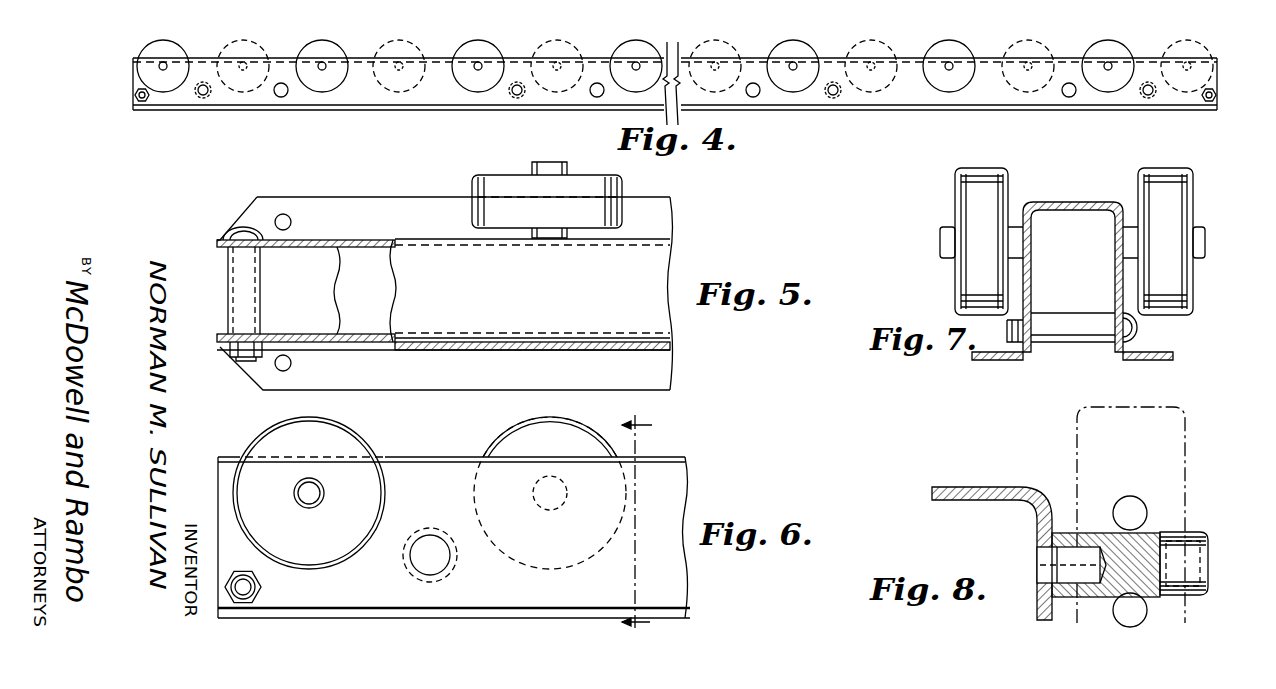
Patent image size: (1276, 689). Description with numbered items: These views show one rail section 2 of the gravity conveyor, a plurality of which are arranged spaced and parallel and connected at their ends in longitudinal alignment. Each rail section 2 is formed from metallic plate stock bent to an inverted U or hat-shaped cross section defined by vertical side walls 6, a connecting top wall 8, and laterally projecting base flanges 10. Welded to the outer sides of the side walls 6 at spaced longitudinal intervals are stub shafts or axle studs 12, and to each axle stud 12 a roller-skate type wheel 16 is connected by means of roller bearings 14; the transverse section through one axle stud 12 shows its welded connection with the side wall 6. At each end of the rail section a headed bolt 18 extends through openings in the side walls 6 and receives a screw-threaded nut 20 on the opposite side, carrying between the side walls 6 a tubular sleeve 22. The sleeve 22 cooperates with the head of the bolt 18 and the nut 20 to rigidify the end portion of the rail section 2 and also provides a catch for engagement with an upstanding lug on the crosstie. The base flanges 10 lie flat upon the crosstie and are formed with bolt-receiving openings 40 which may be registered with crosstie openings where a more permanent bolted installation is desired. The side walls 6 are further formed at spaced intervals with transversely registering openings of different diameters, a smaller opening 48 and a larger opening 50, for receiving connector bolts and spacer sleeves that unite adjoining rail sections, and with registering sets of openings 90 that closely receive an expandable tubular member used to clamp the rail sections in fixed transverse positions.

In FIG. 6, the rail section 2 is at (697, 472).
In FIG. 7, the rail section 2 is at (1088, 190).
In FIG. 5, the vertical side wall 6 is at (306, 291).
In FIG. 7, the vertical side wall 6 is at (1117, 283).
In FIG. 8, the vertical side wall 6 is at (1037, 606).
In FIG. 5, the top wall 8 is at (655, 265).
In FIG. 7, the top wall 8 is at (1080, 205).
In FIG. 8, the top wall 8 is at (965, 490).
In FIG. 5, the base flange 10 is at (398, 192).
In FIG. 6, the base flange 10 is at (487, 612).
In FIG. 7, the base flange 10 is at (993, 362).
In FIG. 4, the axle stud 12 is at (949, 66).
In FIG. 5, the axle stud 12 is at (546, 163).
In FIG. 6, the axle stud 12 is at (310, 493).
In FIG. 7, the axle stud 12 is at (1015, 232).
In FIG. 8, the axle stud 12 is at (1195, 565).
In FIG. 8, the roller bearing 14 is at (1150, 514).
In FIG. 4, the wheel 16 is at (392, 47).
In FIG. 5, the wheel 16 is at (620, 182).
In FIG. 6, the wheel 16 is at (500, 456).
In FIG. 7, the wheel 16 is at (960, 188).
In FIG. 8, the wheel 16 is at (1170, 426).
In FIG. 5, the headed bolt 18 is at (240, 235).
In FIG. 7, the headed bolt 18 is at (1142, 328).
In FIG. 4, the nut 20 is at (135, 95).
In FIG. 5, the nut 20 is at (248, 350).
In FIG. 6, the nut 20 is at (262, 597).
In FIG. 7, the nut 20 is at (1007, 328).
In FIG. 5, the tubular sleeve 22 is at (262, 283).
In FIG. 7, the tubular sleeve 22 is at (1080, 345).
In FIG. 5, the bolt-receiving opening 40 is at (290, 218).
In FIG. 6, the smaller opening 48 is at (413, 558).
In FIG. 6, the larger opening 50 is at (415, 530).
In FIG. 4, the opening 90 is at (284, 98).